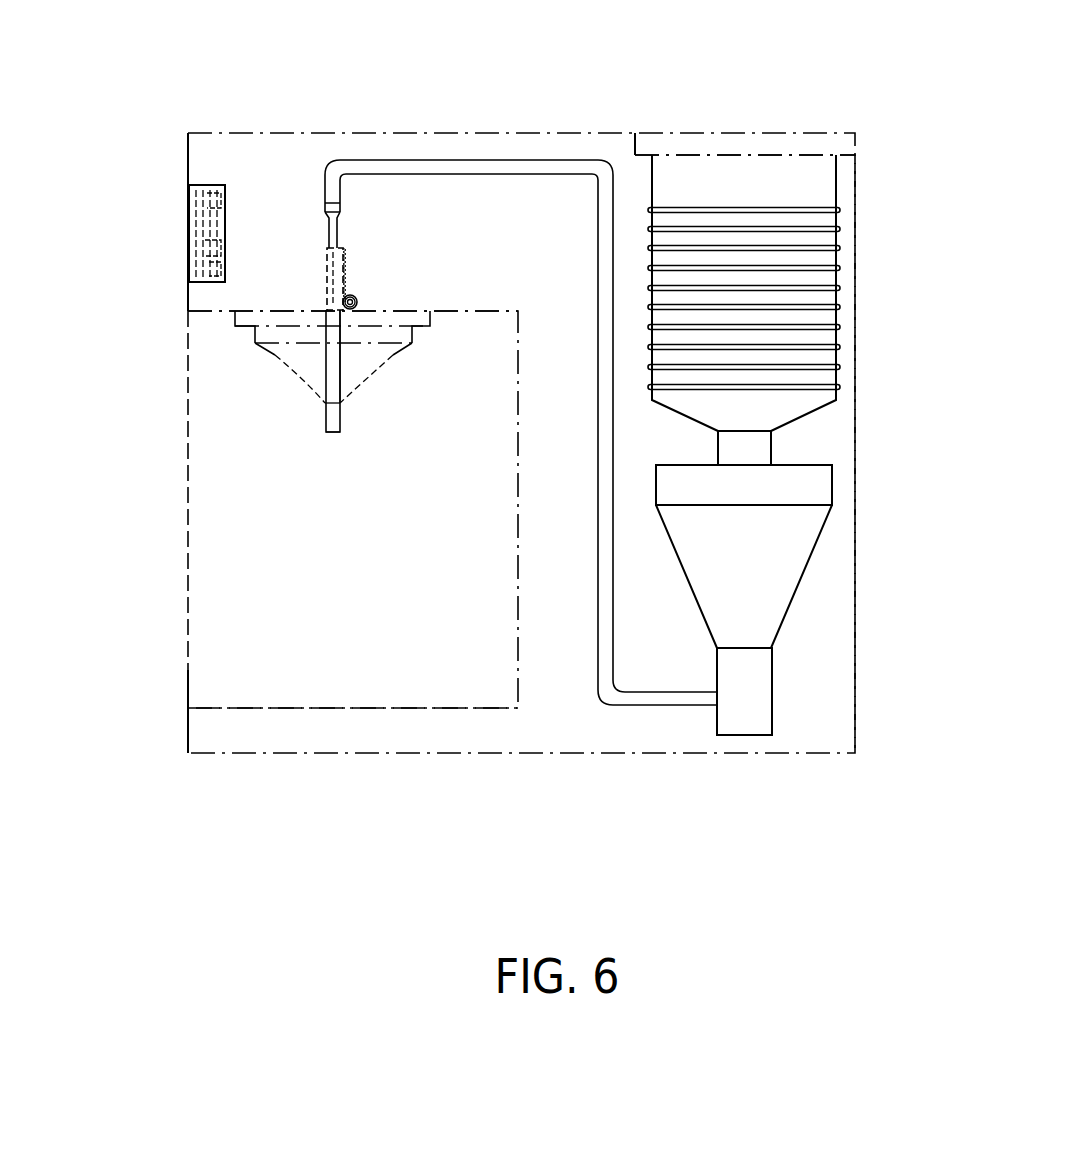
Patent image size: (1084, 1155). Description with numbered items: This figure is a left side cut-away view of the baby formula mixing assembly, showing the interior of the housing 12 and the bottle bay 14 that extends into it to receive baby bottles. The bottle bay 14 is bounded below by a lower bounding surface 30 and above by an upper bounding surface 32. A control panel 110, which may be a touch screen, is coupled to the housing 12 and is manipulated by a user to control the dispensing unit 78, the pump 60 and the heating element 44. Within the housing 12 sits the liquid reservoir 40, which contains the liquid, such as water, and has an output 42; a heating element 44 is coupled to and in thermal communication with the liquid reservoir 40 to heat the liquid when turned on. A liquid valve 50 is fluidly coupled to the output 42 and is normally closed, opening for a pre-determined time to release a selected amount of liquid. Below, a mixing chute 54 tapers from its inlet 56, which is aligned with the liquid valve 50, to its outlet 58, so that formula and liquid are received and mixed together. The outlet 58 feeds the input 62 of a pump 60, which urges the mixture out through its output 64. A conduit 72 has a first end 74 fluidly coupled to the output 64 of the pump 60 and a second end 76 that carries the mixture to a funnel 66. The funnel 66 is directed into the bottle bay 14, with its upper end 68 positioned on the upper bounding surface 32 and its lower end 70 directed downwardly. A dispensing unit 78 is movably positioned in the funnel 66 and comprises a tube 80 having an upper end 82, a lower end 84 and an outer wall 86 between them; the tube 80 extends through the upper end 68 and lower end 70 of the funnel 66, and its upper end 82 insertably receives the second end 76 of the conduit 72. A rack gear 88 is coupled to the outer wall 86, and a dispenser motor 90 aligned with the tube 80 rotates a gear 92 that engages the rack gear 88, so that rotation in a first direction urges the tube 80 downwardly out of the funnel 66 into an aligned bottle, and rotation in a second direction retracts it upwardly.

The housing 12 is at (188, 144).
The bottle bay 14 is at (208, 513).
The lower bounding surface 30 is at (213, 708).
The upper bounding surface 32 is at (213, 311).
The liquid reservoir 40 is at (836, 185).
The output 42 is at (743, 431).
The heating element 44 is at (836, 265).
The liquid valve 50 is at (771, 447).
The mixing chute 54 is at (803, 572).
The inlet 56 is at (682, 465).
The outlet 58 is at (745, 648).
The pump 60 is at (747, 735).
The input 62 is at (727, 647).
The output 64 is at (773, 692).
The funnel 66 is at (273, 353).
The upper end 68 is at (263, 310).
The lower end 70 is at (323, 403).
The conduit 72 is at (530, 171).
The first end 74 is at (773, 692).
The second end 76 is at (343, 352).
The dispensing unit 78 is at (354, 243).
The tube 80 is at (340, 385).
The upper end 82 is at (327, 248).
The lower end 84 is at (330, 433).
The outer wall 86 is at (327, 285).
The rack gear 88 is at (343, 267).
The dispenser motor 90 is at (357, 303).
The gear 92 is at (353, 298).
The control panel 110 is at (188, 207).